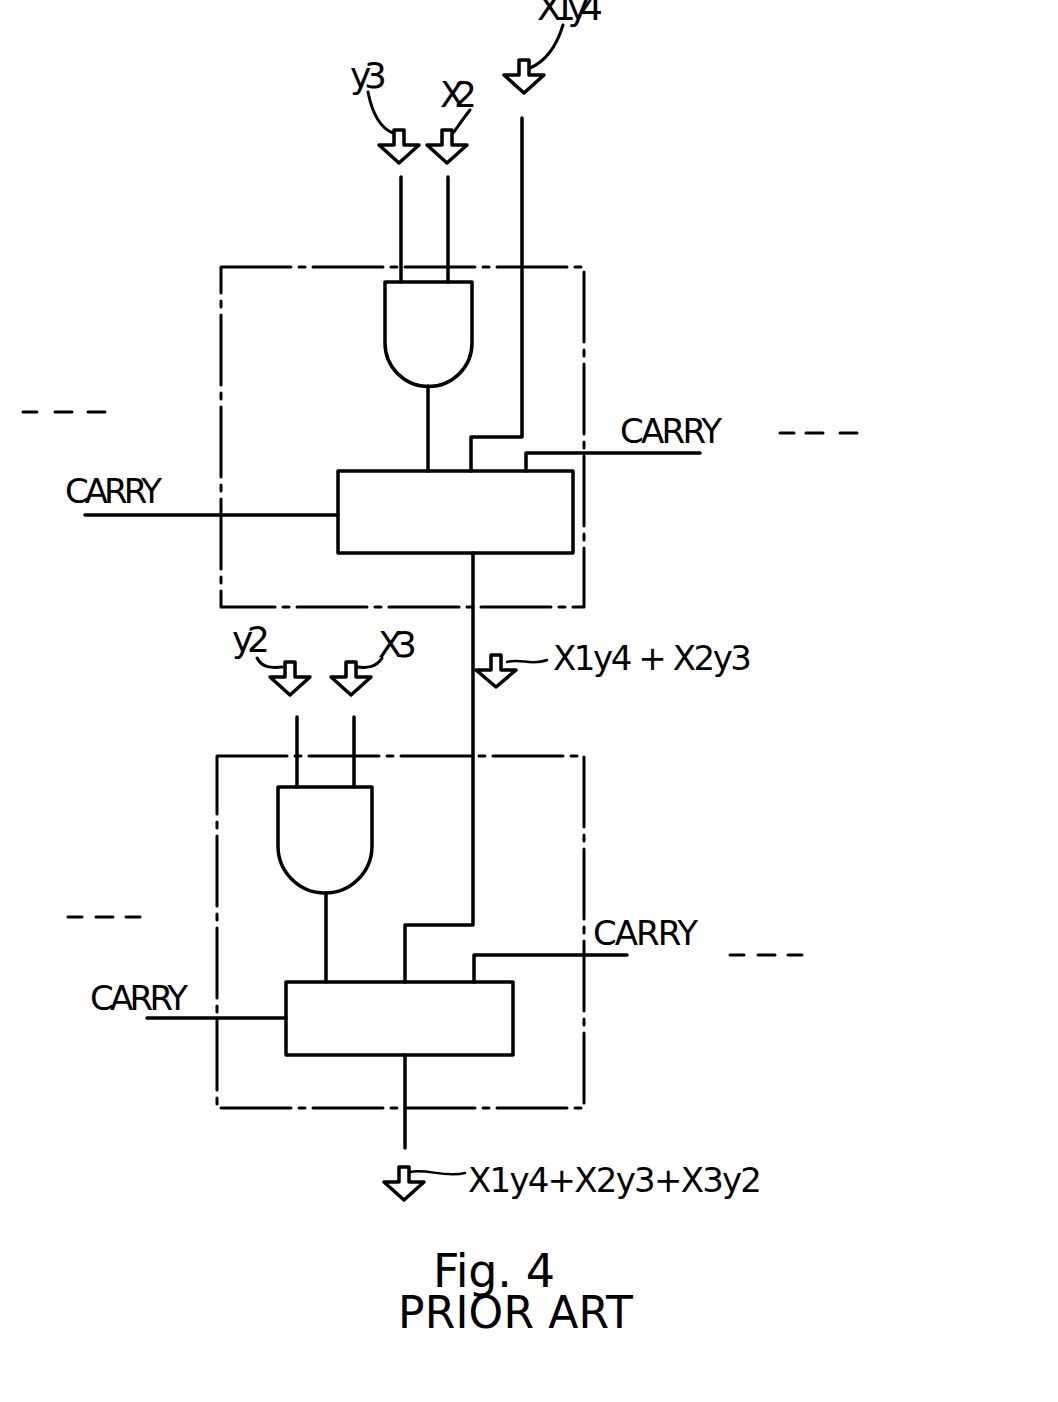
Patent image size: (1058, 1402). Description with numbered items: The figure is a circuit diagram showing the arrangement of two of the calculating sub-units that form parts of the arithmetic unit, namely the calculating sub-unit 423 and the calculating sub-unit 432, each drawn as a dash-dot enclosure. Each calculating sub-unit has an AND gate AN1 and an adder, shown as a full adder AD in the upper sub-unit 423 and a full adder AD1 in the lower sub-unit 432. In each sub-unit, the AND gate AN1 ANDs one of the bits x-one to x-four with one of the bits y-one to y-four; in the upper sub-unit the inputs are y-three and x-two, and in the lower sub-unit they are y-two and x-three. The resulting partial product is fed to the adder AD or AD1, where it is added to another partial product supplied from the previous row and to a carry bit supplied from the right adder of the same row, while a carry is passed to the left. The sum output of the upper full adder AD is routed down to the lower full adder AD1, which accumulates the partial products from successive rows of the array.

The calculating sub-unit 423 is at (585, 318).
The calculating sub-unit 432 is at (584, 865).
The AND gate AN1 is at (385, 347).
The adder AD is at (573, 510).
The adder AD1 is at (287, 1045).